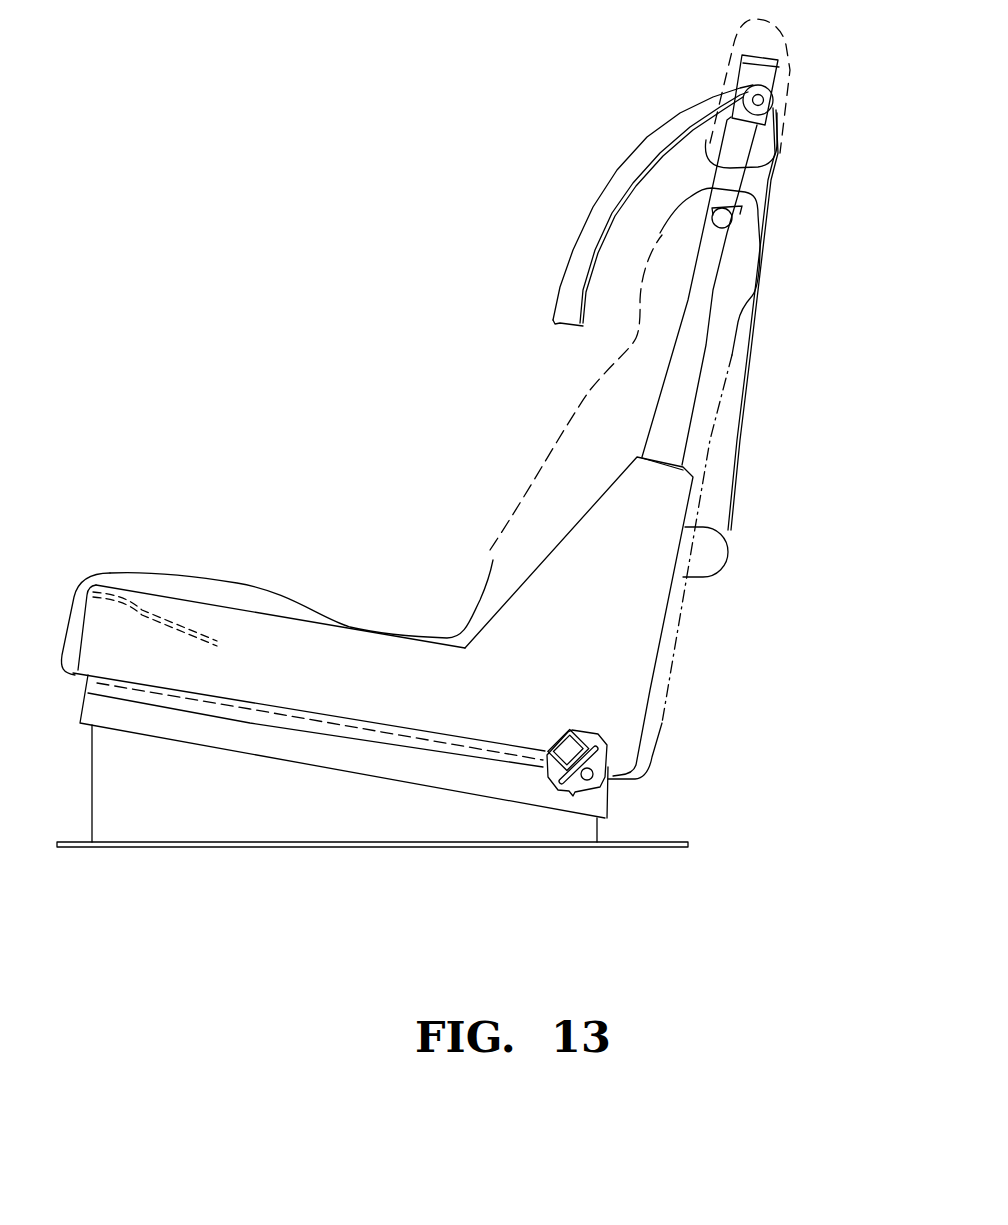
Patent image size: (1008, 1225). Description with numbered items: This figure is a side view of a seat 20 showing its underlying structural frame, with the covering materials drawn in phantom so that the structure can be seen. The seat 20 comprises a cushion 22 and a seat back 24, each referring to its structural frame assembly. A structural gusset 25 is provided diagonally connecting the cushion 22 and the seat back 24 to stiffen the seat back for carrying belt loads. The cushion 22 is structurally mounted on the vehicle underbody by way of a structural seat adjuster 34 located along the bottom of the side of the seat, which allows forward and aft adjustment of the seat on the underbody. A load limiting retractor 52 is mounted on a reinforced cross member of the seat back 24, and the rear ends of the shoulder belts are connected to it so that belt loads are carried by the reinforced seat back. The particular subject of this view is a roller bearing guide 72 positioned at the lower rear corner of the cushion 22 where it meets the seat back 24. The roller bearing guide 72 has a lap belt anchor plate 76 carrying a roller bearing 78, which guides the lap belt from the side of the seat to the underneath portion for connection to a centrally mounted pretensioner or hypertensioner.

The seat 20 is at (664, 670).
The cushion 22 is at (385, 712).
The seat back 24 is at (672, 603).
The structural gussets 25 is at (550, 580).
The structural seat adjusters 34 is at (468, 757).
The load limiting retractor 52 is at (722, 555).
The roller bearing guide 72 is at (554, 800).
The lap belt anchor plate 76 is at (604, 760).
The roller bearing 78 is at (573, 735).